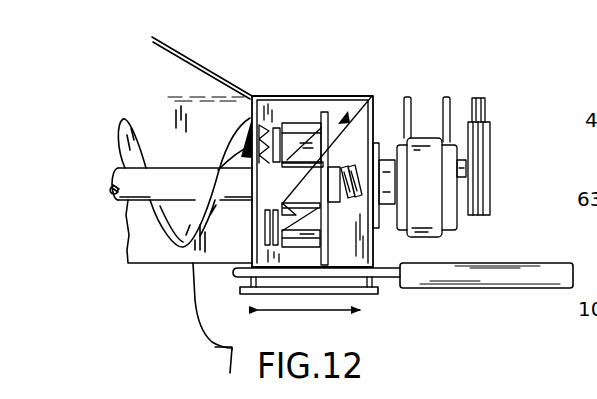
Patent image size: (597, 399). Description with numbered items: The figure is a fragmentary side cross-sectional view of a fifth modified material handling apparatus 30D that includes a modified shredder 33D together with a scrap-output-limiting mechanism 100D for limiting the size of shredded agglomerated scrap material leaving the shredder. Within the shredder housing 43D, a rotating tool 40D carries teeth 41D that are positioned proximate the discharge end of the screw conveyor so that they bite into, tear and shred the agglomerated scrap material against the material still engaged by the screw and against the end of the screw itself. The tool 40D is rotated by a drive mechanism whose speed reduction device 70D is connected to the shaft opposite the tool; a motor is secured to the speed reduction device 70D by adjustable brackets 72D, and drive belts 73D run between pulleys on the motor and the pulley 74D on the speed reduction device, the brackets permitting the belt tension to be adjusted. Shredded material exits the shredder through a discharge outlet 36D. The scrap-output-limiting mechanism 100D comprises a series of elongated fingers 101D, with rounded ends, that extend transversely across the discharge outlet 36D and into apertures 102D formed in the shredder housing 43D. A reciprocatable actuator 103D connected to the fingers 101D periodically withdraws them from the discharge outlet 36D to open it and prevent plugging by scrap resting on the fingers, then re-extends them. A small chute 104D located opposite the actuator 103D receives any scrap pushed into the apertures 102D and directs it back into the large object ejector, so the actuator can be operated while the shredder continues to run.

The material handling apparatus 30D is at (339, 48).
The shredder 33D is at (345, 88).
The discharge outlet 36D is at (367, 297).
The tool 40D is at (410, 108).
The teeth 41D is at (297, 133).
The shredder housing 43D is at (278, 97).
The speed reduction device 70D is at (433, 238).
The brackets 72D is at (437, 112).
The drive belts 73D is at (491, 104).
The pulley 74D is at (492, 163).
The scrap-output-limiting mechanism 100D is at (430, 296).
The elongated fingers 101D is at (265, 282).
The apertures 102D is at (233, 275).
The reciprocatable actuator 103D is at (490, 263).
The chute 104D is at (215, 350).